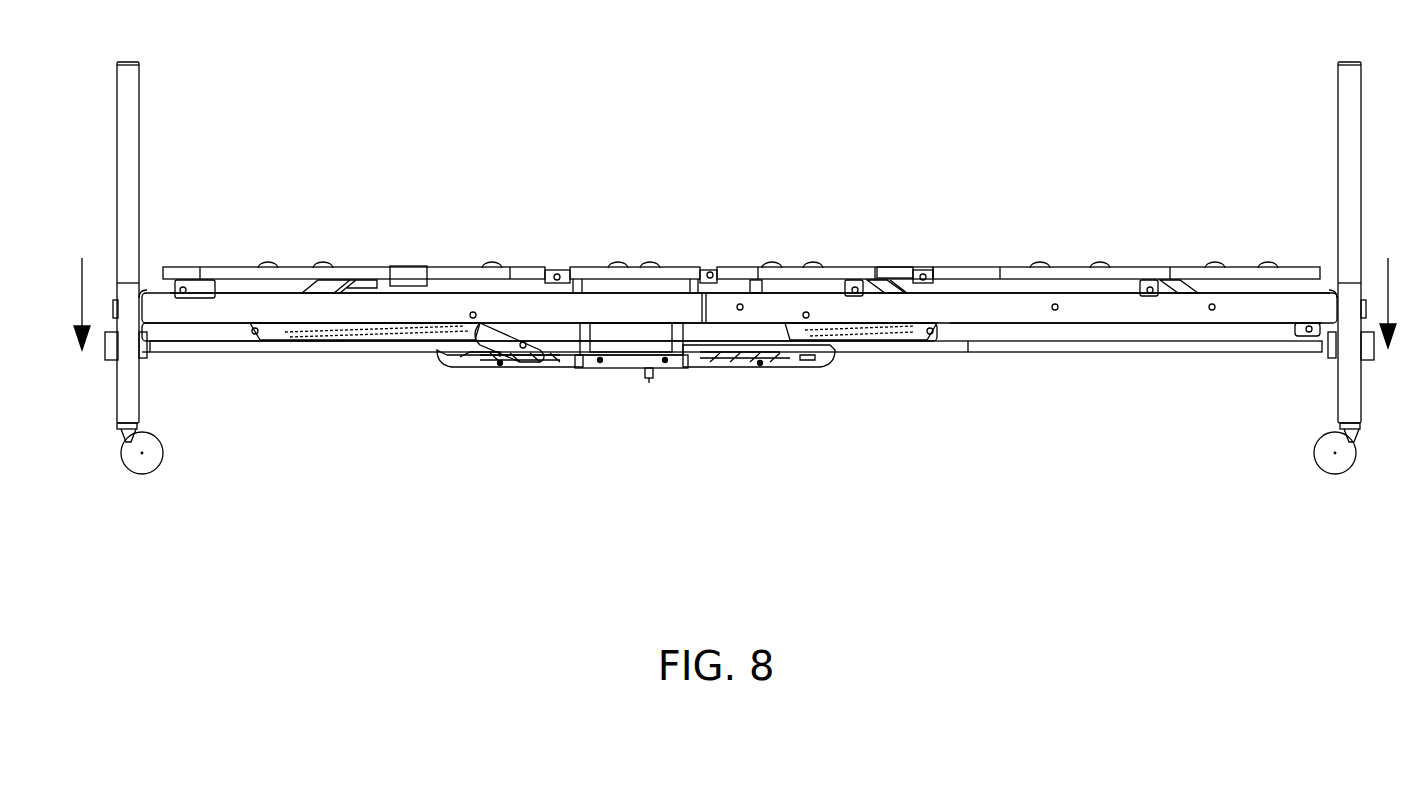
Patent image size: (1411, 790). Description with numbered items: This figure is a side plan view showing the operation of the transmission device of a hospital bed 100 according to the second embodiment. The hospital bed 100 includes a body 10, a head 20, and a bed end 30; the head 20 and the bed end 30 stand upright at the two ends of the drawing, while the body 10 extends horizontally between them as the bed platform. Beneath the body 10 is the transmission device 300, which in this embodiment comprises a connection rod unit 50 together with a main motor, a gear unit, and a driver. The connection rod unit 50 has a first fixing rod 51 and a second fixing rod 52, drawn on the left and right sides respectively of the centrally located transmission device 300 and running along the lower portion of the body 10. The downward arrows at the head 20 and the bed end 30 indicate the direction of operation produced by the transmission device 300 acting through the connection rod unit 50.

The hospital bed 100 is at (750, 228).
The body 10 is at (520, 305).
The head 20 is at (142, 212).
The bed end 30 is at (1337, 210).
The connection rod unit 50 is at (958, 358).
The first fixing rod 51 is at (418, 345).
The second fixing rod 52 is at (888, 345).
The transmission device 300 is at (630, 337).